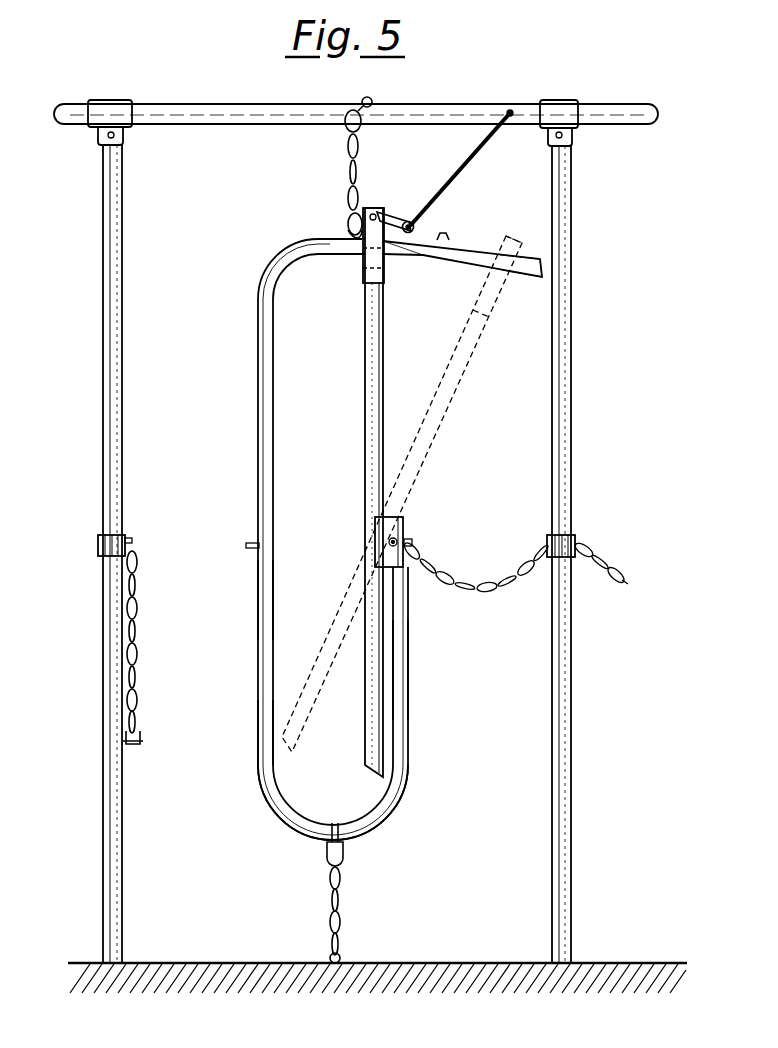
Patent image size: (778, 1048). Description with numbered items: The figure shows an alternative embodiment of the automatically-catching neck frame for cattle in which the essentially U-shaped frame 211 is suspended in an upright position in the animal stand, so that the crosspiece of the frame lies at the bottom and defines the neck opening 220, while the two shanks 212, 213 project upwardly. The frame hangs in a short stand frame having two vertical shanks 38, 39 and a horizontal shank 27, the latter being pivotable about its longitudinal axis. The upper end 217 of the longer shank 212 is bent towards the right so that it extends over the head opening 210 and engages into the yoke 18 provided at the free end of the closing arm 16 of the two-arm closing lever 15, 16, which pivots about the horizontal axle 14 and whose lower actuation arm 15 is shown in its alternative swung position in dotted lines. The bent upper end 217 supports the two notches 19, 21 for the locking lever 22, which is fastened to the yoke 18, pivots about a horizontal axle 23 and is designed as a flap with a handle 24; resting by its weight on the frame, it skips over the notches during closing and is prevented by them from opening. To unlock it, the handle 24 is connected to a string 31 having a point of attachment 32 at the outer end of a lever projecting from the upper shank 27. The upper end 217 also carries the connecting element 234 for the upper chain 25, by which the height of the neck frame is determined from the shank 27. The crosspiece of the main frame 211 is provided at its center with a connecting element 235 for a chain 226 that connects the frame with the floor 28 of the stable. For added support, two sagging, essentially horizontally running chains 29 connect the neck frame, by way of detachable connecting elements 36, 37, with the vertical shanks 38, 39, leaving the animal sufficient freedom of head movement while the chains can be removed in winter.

The horizontal axle 14 is at (389, 540).
The actuation arm 15 is at (371, 683).
The closing arm 16 is at (385, 401).
The yoke member 18 is at (364, 262).
The notch 19 is at (448, 236).
The notch 21 is at (482, 245).
The locking lever 22 is at (395, 218).
The horizontal axle 23 is at (373, 210).
The handle 24 is at (407, 233).
The upper suspension chain 25 is at (347, 160).
The horizontal shank 27 is at (201, 103).
The floor 28 is at (250, 963).
The horizontally-running chains 29 is at (139, 589).
The string 31 is at (468, 157).
The point of attachment 32 is at (509, 110).
The connecting element 36 is at (251, 549).
The connecting element 37 is at (418, 540).
The vertical shank 38 is at (123, 450).
The vertical shank 39 is at (562, 448).
The head opening 210 is at (335, 390).
The U-shaped frame 211 is at (256, 789).
The longer shank 212 is at (272, 613).
The shank 213 is at (399, 691).
The upper end 217 is at (510, 252).
The neck opening 220 is at (333, 629).
The chain 226 is at (327, 888).
The connecting element 234 is at (348, 232).
The connecting element 235 is at (327, 840).